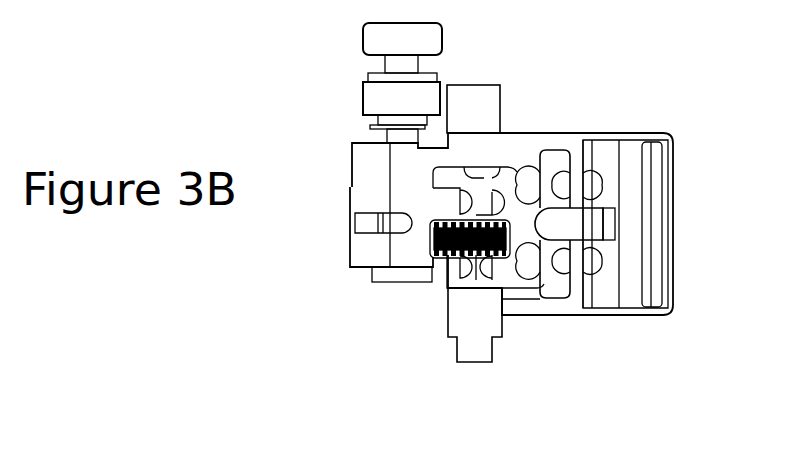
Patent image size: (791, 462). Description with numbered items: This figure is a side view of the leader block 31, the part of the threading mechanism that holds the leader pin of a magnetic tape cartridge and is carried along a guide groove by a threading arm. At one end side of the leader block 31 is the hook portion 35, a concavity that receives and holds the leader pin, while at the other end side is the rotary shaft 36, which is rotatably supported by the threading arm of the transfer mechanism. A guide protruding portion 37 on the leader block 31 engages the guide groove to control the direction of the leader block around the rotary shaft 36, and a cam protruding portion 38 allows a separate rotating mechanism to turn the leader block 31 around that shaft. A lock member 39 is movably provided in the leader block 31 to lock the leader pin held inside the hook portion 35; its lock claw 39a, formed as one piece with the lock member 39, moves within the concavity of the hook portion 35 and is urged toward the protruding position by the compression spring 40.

The leader block 31 is at (550, 134).
The hook portion 35 is at (632, 178).
The rotary shaft 36 is at (405, 67).
The guide protruding portion 37 is at (493, 106).
The cam protruding portion 38 is at (470, 349).
The lock member 39 is at (553, 287).
The lock claw 39a is at (585, 228).
The compression spring 40 is at (442, 266).